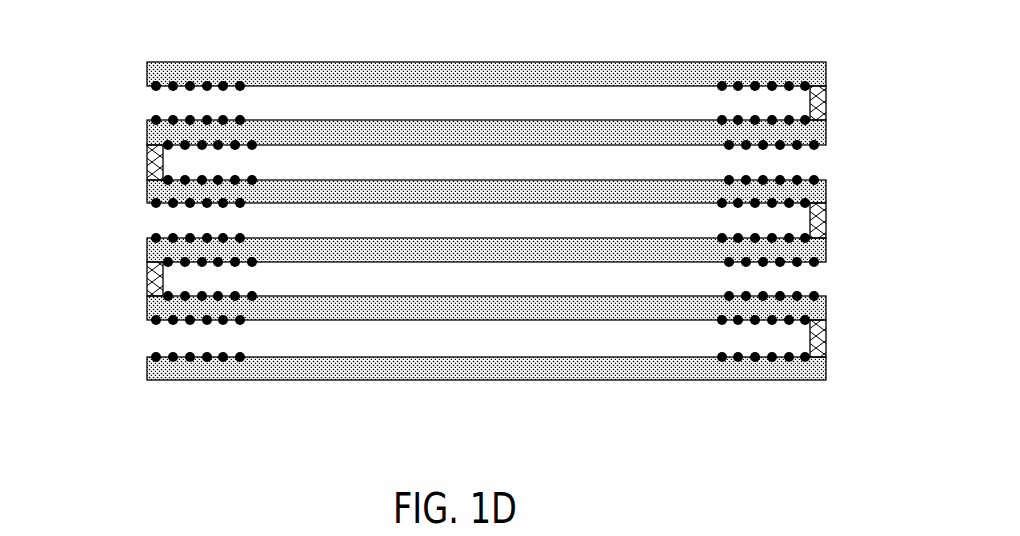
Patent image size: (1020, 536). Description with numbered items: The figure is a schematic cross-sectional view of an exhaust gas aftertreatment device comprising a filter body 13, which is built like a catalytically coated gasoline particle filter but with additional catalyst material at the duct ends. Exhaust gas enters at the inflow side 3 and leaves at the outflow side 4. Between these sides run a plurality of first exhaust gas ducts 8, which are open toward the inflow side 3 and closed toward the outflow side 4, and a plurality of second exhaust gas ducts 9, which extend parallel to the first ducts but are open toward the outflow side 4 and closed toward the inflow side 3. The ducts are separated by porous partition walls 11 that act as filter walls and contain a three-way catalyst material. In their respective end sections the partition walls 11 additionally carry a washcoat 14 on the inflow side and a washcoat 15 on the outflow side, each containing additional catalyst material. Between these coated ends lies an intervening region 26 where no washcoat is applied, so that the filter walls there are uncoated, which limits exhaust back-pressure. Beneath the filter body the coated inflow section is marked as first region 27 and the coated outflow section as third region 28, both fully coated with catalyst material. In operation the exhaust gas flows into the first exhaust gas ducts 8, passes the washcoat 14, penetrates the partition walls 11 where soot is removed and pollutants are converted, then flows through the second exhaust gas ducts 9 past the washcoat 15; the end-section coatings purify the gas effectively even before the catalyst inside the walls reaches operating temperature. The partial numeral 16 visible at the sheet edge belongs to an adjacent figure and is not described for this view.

The filter body 13 is at (834, 50).
The outflow side 4 is at (838, 106).
The inflow side 3 is at (117, 110).
The partition walls 11 is at (163, 188).
The second exhaust gas ducts 9 is at (798, 272).
The first exhaust gas ducts 8 is at (153, 328).
The washcoat 14 is at (245, 357).
The washcoat 15 is at (721, 355).
The intervening region 26 is at (263, 380).
The first region 27 is at (261, 380).
The third region 28 is at (717, 380).
The component 16 is at (746, 535).